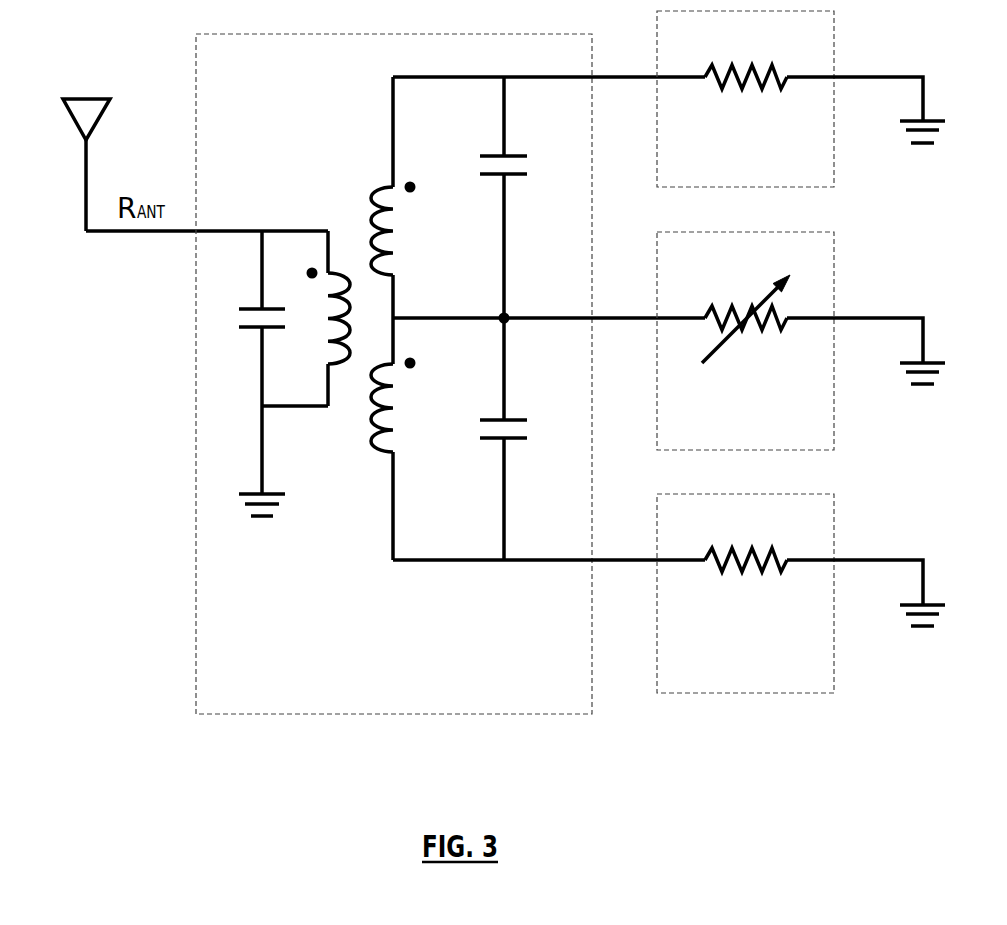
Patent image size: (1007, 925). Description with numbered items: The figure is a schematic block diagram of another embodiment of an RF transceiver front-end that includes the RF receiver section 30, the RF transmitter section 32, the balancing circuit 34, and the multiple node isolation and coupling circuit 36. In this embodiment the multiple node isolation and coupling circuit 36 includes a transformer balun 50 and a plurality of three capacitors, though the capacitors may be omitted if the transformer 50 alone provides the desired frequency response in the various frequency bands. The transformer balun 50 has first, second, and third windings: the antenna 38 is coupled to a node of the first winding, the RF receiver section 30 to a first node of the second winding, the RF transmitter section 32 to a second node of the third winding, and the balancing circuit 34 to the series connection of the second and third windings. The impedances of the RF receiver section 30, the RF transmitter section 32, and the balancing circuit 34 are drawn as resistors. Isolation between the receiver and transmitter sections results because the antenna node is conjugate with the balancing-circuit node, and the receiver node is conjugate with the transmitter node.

The antenna 38 is at (98, 90).
The multiple node isolation and coupling circuit 36 is at (450, 374).
The transformer balun 50 is at (361, 337).
The RF receiver section 30 is at (802, 172).
The balancing circuit 34 is at (795, 437).
The RF transmitter section 32 is at (802, 678).